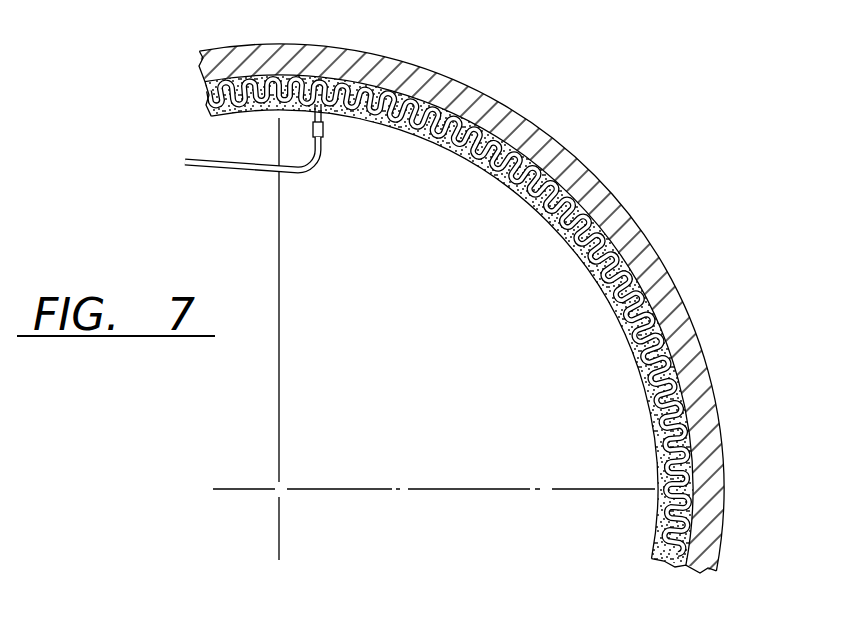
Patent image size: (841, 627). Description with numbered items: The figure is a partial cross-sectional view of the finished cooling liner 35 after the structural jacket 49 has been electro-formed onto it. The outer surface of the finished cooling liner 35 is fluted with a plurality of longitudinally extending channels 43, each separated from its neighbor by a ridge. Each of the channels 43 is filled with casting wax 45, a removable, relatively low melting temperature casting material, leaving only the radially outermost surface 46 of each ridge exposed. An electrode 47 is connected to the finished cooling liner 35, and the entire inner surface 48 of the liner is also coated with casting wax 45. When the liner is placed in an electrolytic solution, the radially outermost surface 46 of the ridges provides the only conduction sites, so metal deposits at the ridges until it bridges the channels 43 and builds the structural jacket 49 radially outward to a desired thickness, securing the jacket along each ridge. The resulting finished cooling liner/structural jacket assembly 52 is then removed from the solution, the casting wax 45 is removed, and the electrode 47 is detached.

The finished cooling liner 35 is at (642, 370).
The channels 43 is at (520, 152).
The casting wax 45 is at (596, 203).
The radially outermost surface 46 is at (661, 252).
The electrode 47 is at (323, 132).
The inner surface 48 is at (597, 282).
The structural jacket 49 is at (678, 313).
The finished cooling liner/structural jacket assembly 52 is at (673, 249).